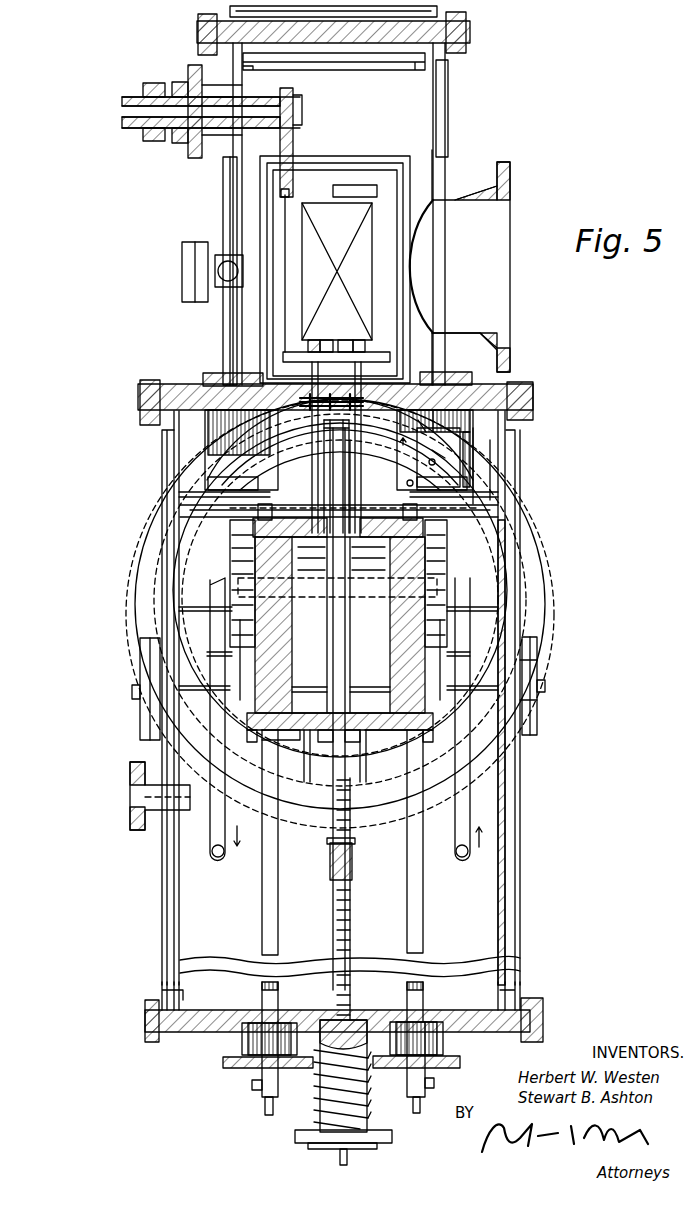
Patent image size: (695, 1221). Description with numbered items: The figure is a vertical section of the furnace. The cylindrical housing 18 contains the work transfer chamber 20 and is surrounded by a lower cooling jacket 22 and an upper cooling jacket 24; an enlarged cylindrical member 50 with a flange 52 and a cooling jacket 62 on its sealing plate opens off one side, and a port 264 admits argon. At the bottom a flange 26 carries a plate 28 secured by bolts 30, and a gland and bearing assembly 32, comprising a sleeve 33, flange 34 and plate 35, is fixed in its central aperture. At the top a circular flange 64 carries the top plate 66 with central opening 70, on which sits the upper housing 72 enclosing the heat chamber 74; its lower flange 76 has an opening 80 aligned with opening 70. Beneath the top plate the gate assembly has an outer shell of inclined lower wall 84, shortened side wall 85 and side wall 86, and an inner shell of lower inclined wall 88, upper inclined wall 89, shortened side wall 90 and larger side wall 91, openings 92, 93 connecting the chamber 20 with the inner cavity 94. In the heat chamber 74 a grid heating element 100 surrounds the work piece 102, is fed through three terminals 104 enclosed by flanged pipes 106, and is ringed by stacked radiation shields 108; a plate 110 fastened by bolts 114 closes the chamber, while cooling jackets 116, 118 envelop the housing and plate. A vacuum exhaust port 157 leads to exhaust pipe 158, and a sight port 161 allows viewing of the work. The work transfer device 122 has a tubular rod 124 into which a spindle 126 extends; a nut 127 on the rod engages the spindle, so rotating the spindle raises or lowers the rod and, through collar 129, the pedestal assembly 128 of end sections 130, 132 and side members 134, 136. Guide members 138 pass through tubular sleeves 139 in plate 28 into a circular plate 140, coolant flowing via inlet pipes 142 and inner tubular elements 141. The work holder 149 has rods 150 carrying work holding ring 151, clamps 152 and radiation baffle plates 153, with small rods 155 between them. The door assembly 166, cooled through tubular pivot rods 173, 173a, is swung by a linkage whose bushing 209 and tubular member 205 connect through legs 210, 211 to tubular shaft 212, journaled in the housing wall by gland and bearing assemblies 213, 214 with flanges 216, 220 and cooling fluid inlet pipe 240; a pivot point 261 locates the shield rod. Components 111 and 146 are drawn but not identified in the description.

The housing 18 is at (167, 895).
The work transfer chamber 20 is at (192, 850).
The lower cooling jacket 22 is at (520, 892).
The upper cooling jacket 24 is at (512, 489).
The flange 26 is at (163, 1000).
The plate 28 is at (199, 1032).
The bolts 30 is at (543, 1003).
The gland and bearing assembly 32 is at (303, 1115).
The sleeve 33 is at (372, 1121).
The flange 34 is at (296, 1136).
The plate 35 is at (308, 1146).
The cylindrical member 50 is at (496, 566).
The flange 52 is at (539, 557).
The cooling jacket 62 is at (472, 458).
The circular flange 64 is at (540, 401).
The top plate 66 is at (535, 390).
The central opening 70 is at (441, 415).
The upper housing 72 is at (448, 163).
The heat chamber 74 is at (425, 192).
The lower flange 76 is at (217, 380).
The opening 80 is at (430, 374).
The inclined lower wall 84 is at (220, 487).
The shortened side wall 85 is at (258, 380).
The continuous side wall 86 is at (475, 458).
The lower inclined wall 88 is at (255, 471).
The upper inclined wall 89 is at (435, 447).
The shortened side wall 90 is at (400, 477).
The larger side wall 91 is at (427, 449).
The opening 92 is at (424, 460).
The opening 93 is at (414, 418).
The cavity 94 is at (401, 443).
The heating element 100 is at (370, 185).
The work piece 102 is at (350, 233).
The terminals 104 is at (294, 146).
The flanged pipes 106 is at (190, 152).
The radiation shields 108 is at (380, 168).
The plate 110 is at (388, 27).
The inner shield 111 is at (387, 172).
The bolts 114 is at (467, 18).
The cooling jacket 116 is at (220, 210).
The cooling jacket 118 is at (200, 16).
The work transfer device 122 is at (369, 766).
The tubular rod 124 is at (318, 520).
The spindle 126 is at (346, 900).
The nut 127 is at (352, 864).
The pedestal assembly 128 is at (383, 568).
The collar 129 is at (363, 735).
The end section 130 is at (394, 514).
The end section 132 is at (307, 755).
The side member 134 is at (413, 572).
The side member 136 is at (262, 553).
The guide members 138 is at (274, 913).
The tubular sleeves 139 is at (252, 1038).
The circular plate 140 is at (239, 1067).
The inner tubular elements 141 is at (266, 1104).
The inlet pipes 142 is at (253, 1088).
The shaft 146 is at (351, 469).
The work holder 149 is at (334, 338).
The rods 150 is at (314, 368).
The work holding ring 151 is at (308, 342).
The work holding clamps 152 is at (347, 346).
The radiation baffle plates 153 is at (365, 402).
The small rods 155 is at (352, 480).
The vacuum exhaust port 157 is at (418, 225).
The vacuum exhaust pipe 158 is at (490, 335).
The sight port 161 is at (182, 275).
The door assembly 166 is at (356, 373).
The tubular pivot rod 173 is at (467, 794).
The tubular pivot rod 173a is at (217, 867).
The tubular member 205 is at (310, 731).
The bushing 209 is at (335, 738).
The leg 210 is at (253, 745).
The leg 211 is at (433, 744).
The tubular shaft 212 is at (307, 690).
The gland and bearing assembly 213 is at (553, 666).
The gland and bearing assembly 214 is at (138, 750).
The flange 216 is at (523, 705).
The flange 220 is at (528, 735).
The cooling fluid inlet pipe 240 is at (546, 685).
The pivot point 261 is at (205, 607).
The port 264 is at (132, 832).